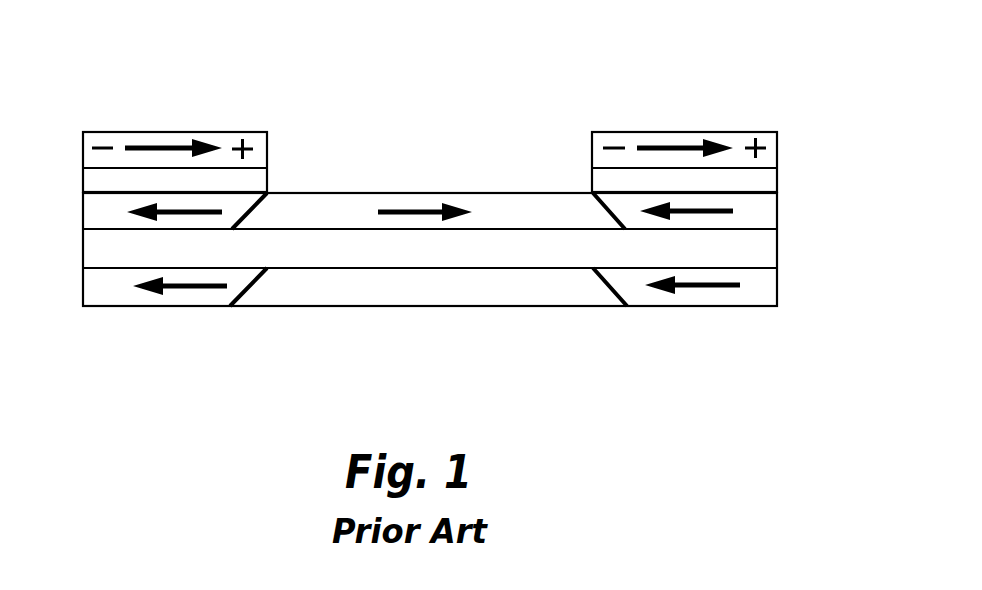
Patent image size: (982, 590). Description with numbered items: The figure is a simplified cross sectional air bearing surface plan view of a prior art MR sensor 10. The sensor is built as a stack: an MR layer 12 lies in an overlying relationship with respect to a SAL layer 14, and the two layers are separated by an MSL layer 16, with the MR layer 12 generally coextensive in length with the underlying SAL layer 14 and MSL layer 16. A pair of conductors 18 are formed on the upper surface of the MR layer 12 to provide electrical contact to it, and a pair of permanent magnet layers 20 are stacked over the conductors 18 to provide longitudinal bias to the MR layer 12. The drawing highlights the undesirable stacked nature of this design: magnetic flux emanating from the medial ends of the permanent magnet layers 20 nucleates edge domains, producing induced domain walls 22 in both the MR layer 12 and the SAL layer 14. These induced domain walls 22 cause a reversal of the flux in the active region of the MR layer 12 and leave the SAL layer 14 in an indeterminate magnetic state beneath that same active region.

The prior art MR sensor 10 is at (272, 443).
The MR layer 12 is at (773, 205).
The SAL layer 14 is at (777, 285).
The MSL layer 16 is at (773, 250).
The conductors 18 is at (267, 178).
The permanent magnet layers 20 is at (130, 131).
The induced domain walls 22 is at (255, 210).